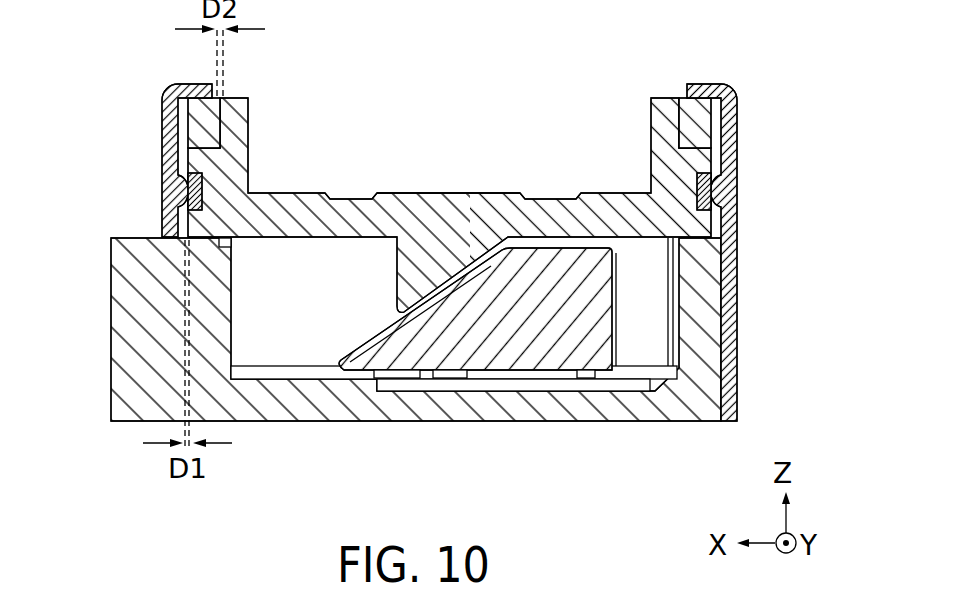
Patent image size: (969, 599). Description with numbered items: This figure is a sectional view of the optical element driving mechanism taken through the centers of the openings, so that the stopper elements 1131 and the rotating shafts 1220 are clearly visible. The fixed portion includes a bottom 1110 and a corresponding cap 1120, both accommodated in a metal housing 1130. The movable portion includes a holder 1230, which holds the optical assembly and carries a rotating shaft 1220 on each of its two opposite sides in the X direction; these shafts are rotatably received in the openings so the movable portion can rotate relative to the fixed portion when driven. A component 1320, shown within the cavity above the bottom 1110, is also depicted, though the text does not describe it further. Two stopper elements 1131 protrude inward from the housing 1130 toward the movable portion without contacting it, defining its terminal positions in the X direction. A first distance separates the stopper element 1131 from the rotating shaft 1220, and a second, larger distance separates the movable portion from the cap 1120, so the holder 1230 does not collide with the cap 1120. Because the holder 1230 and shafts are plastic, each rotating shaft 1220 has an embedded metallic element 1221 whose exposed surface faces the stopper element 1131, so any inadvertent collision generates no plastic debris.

The bottom 1110 is at (676, 410).
The cap 1120 is at (200, 128).
The housing 1130 is at (176, 160).
The stopper element 1131 is at (183, 197).
The rotating shaft 1220 is at (194, 222).
The metallic element 1221 is at (217, 153).
The holder 1230 is at (438, 200).
The optical element 1320 is at (517, 338).